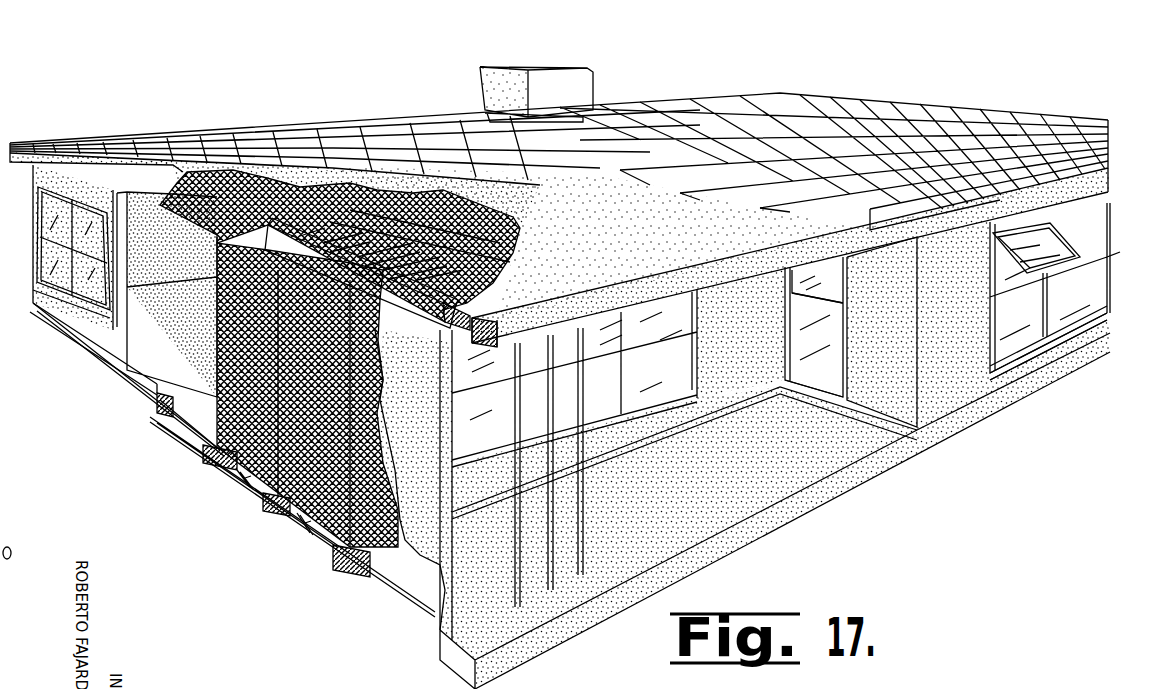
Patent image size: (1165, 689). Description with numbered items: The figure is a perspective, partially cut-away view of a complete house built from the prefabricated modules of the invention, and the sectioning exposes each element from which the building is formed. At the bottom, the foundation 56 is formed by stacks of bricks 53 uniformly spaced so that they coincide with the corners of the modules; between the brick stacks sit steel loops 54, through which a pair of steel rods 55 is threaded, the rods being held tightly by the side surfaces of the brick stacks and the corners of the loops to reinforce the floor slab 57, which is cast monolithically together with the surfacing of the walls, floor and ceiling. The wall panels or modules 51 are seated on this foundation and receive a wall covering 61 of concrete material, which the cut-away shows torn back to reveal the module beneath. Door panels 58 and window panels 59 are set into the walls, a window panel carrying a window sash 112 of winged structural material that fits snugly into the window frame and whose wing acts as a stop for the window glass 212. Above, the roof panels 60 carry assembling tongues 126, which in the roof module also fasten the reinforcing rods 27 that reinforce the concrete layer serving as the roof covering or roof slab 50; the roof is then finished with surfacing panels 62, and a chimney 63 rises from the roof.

The reinforcing rods 27 is at (517, 227).
The roof slab 50 is at (704, 254).
The wall modules 51 is at (250, 445).
The bricks 53 is at (283, 512).
The steel loops 54 is at (305, 520).
The steel rods 55 is at (381, 604).
The foundation 56 is at (143, 417).
The floor slab 57 is at (168, 397).
The door panels 58 is at (832, 368).
The window panels 59 is at (1035, 348).
The roof panels 60 is at (290, 249).
The wall covering 61 is at (404, 542).
The surfacing panels 62 is at (630, 130).
The chimney 63 is at (560, 86).
The window sash 112 is at (1108, 255).
The assembling tongues 126 is at (416, 290).
The window glass 212 is at (1090, 236).